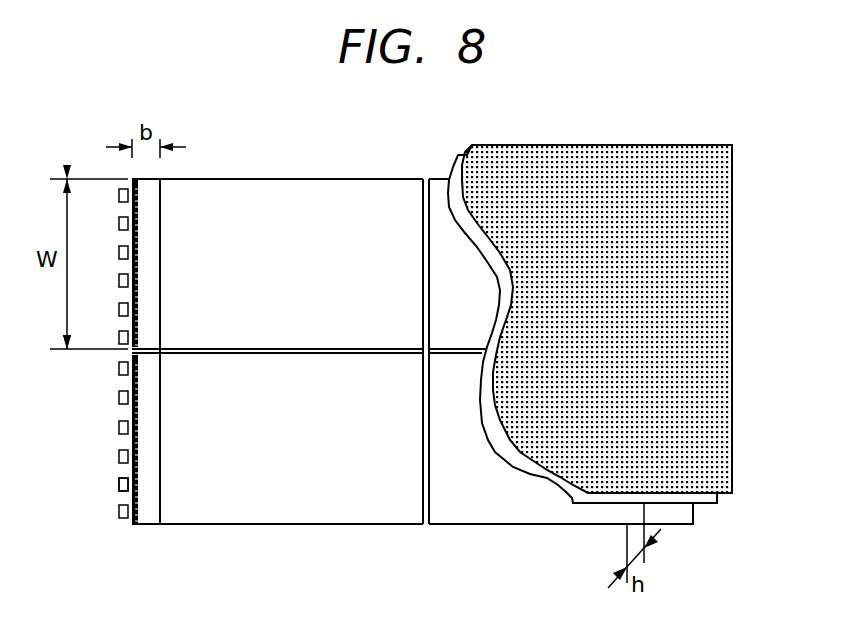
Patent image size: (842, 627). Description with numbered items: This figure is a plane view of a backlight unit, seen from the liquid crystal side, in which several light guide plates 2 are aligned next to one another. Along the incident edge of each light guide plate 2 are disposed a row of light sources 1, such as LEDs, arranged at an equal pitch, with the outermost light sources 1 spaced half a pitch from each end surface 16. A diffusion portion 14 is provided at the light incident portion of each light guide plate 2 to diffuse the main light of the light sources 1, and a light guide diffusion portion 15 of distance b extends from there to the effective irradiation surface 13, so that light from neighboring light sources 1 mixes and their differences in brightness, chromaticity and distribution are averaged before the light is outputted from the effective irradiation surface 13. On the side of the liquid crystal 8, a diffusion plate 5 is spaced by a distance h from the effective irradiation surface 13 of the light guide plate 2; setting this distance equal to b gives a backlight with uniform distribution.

The light source 1 is at (118, 486).
The light guide plate 2 is at (345, 197).
The diffusion plate 5 is at (553, 478).
The liquid crystal 8 is at (720, 222).
The effective irradiation surface 13 is at (290, 258).
The diffusion portion 14 is at (137, 507).
The light guide diffusion portion 15 is at (148, 468).
The end surface 16 is at (147, 178).